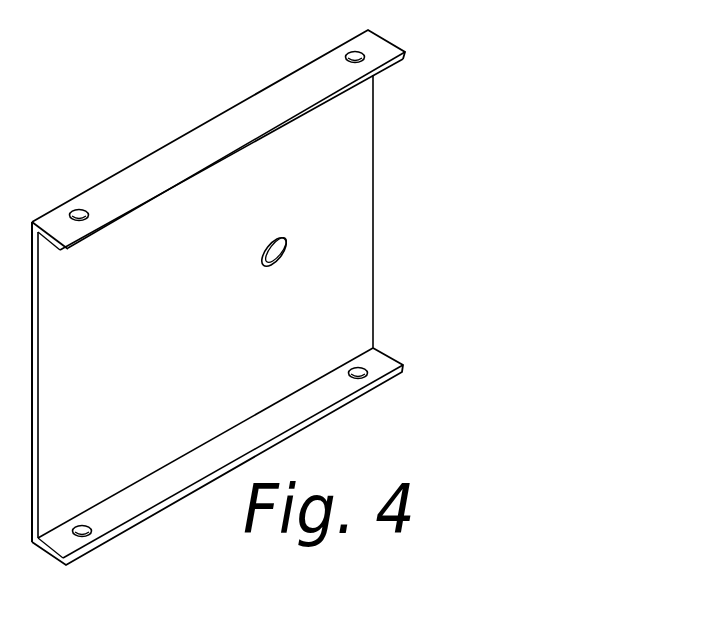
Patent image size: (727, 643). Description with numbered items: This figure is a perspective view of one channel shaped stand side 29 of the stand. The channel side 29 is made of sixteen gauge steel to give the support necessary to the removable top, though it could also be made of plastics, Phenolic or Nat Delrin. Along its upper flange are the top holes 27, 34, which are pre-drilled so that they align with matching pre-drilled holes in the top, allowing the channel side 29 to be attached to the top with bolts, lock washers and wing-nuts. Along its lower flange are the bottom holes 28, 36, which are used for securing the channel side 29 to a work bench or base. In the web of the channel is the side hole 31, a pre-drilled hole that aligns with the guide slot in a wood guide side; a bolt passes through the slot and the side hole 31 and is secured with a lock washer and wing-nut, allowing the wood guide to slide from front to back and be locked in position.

The channel shaped stand side 29 is at (353, 212).
The top hole 34 is at (349, 53).
The top hole 27 is at (88, 216).
The side hole 31 is at (281, 238).
The bottom hole 36 is at (361, 380).
The bottom hole 28 is at (92, 532).